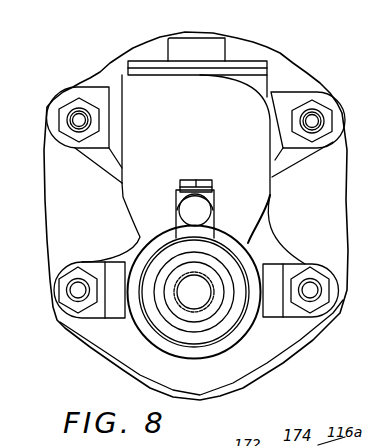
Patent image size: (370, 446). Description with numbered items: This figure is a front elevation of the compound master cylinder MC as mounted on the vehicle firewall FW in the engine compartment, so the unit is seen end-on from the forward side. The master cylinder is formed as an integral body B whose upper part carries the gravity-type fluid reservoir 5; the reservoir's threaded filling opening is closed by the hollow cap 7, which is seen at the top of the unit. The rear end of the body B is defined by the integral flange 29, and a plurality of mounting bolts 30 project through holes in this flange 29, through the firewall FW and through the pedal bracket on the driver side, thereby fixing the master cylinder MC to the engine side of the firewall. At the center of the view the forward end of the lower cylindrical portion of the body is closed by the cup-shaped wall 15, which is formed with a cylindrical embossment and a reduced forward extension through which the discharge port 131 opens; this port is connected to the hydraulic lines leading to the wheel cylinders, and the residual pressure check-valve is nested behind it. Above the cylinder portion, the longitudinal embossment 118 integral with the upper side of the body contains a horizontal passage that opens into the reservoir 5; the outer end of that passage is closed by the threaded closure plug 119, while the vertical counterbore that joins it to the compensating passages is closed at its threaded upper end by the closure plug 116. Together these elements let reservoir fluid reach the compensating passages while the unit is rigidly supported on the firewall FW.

The fluid reservoir 5 is at (138, 110).
The hollow cap 7 is at (183, 40).
The cup-shaped wall 15 is at (225, 327).
The flange 29 is at (305, 157).
The mounting bolts 30 is at (80, 147).
The closure plug 116 is at (210, 180).
The longitudinal embossment 118 is at (202, 215).
The closure plug 119 is at (190, 207).
The discharge port 131 is at (180, 287).
The body B is at (248, 240).
The compound master cylinder MC is at (110, 199).
The firewall FW is at (83, 335).